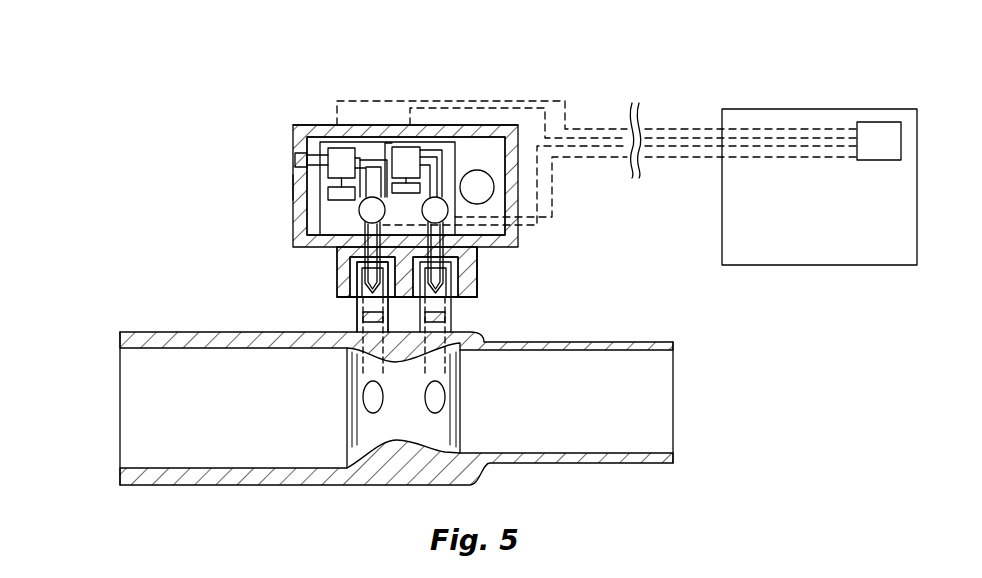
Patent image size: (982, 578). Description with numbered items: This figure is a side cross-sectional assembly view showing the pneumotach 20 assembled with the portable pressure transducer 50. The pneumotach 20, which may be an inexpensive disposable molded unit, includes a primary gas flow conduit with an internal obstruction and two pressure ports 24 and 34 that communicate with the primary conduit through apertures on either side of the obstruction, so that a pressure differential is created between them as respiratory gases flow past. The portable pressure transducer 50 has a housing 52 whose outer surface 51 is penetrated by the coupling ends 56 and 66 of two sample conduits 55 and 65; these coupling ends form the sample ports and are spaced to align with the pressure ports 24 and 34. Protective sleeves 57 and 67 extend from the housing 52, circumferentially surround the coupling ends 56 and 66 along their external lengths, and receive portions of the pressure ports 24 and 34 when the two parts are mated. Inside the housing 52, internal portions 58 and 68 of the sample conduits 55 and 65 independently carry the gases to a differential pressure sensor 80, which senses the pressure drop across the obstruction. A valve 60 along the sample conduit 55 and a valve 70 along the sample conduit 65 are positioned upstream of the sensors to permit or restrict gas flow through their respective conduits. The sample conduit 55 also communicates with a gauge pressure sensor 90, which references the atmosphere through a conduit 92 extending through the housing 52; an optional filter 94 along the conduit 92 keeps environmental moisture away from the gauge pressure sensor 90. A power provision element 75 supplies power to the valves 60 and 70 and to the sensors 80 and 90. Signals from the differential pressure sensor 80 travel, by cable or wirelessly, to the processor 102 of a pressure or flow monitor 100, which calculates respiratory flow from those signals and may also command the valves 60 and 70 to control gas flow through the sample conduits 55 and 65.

The pneumotach 20 is at (80, 308).
The pressure port 24 is at (455, 315).
The pressure port 34 is at (357, 315).
The portable pressure transducer 50 is at (225, 99).
The outer surface 51 is at (330, 125).
The housing 52 is at (313, 137).
The sample conduit 55 is at (566, 252).
The coupling end 56 is at (477, 268).
The protective sleeve 57 is at (478, 293).
The internal portion 58 is at (448, 215).
The valve 60 is at (375, 197).
The sample conduit 65 is at (344, 277).
The coupling end 66 is at (348, 283).
The protective sleeve 67 is at (319, 291).
The internal portion 68 is at (332, 246).
The valve 70 is at (443, 185).
The power provision element 75 is at (492, 196).
The differential pressure sensor 80 is at (405, 147).
The gauge pressure sensor 90 is at (343, 152).
The conduit 92 is at (300, 187).
The filter 94 is at (300, 160).
The monitor 100 is at (693, 72).
The processor 102 is at (876, 130).